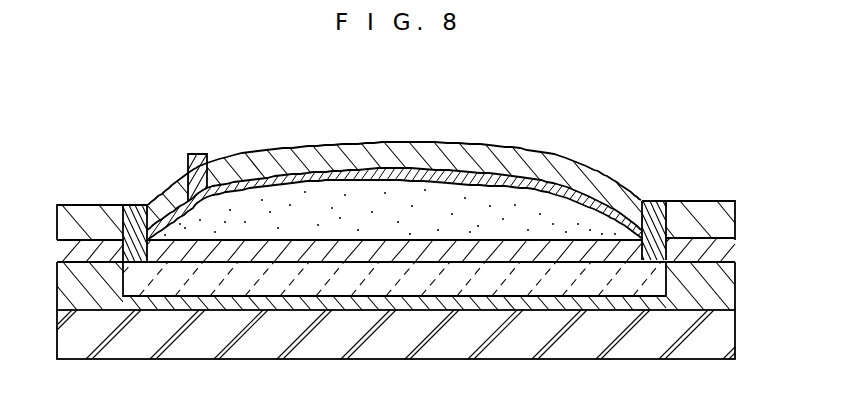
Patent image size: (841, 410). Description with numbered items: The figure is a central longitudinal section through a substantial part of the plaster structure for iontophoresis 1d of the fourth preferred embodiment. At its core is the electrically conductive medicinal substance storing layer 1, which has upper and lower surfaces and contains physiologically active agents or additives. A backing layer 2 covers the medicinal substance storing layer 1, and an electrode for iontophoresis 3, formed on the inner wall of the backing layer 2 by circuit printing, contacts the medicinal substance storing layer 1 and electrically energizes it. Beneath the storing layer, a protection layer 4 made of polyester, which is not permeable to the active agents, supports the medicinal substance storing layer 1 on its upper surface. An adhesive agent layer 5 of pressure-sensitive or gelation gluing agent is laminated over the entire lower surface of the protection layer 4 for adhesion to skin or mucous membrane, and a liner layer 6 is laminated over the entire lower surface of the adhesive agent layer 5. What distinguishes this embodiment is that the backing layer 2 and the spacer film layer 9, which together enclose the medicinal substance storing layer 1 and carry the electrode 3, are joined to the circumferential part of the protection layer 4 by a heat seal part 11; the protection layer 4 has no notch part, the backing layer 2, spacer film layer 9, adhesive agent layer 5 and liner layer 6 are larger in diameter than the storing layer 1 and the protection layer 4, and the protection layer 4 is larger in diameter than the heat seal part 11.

The medicinal substance storing layer 1 is at (448, 198).
The plaster structure for iontophoresis 1d is at (247, 130).
The backing layer 2 is at (710, 213).
The electrode for iontophoresis 3 is at (545, 180).
The protection layer 4 is at (527, 285).
The adhesive agent layer 5 is at (720, 288).
The liner layer 6 is at (718, 338).
The spacer film layer 9 is at (728, 247).
The heat seal part 11 is at (654, 208).